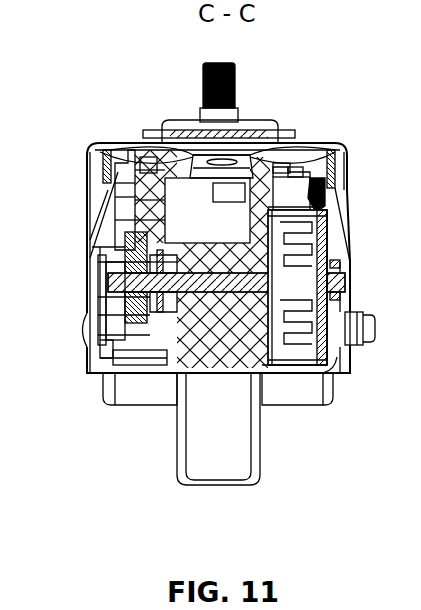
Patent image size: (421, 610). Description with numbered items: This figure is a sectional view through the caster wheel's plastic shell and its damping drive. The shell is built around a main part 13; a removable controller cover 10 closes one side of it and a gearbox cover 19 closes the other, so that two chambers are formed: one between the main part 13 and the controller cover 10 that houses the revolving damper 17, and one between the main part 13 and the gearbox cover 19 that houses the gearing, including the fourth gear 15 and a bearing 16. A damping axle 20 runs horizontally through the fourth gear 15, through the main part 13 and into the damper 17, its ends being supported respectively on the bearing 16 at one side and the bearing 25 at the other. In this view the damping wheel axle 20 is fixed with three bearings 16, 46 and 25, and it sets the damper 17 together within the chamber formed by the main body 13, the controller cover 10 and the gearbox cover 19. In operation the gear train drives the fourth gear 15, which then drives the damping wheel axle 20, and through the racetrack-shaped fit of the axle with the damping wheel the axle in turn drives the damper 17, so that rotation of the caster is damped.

The controller cover 10 is at (333, 148).
The main part 13 is at (163, 155).
The fourth gear 15 is at (128, 330).
The bearing 16 is at (108, 345).
The revolving damper 17 is at (301, 355).
The gearbox cover 19 is at (97, 153).
The damping axle 20 is at (188, 290).
The bearing 25 is at (343, 350).
The bearing 46 is at (172, 298).